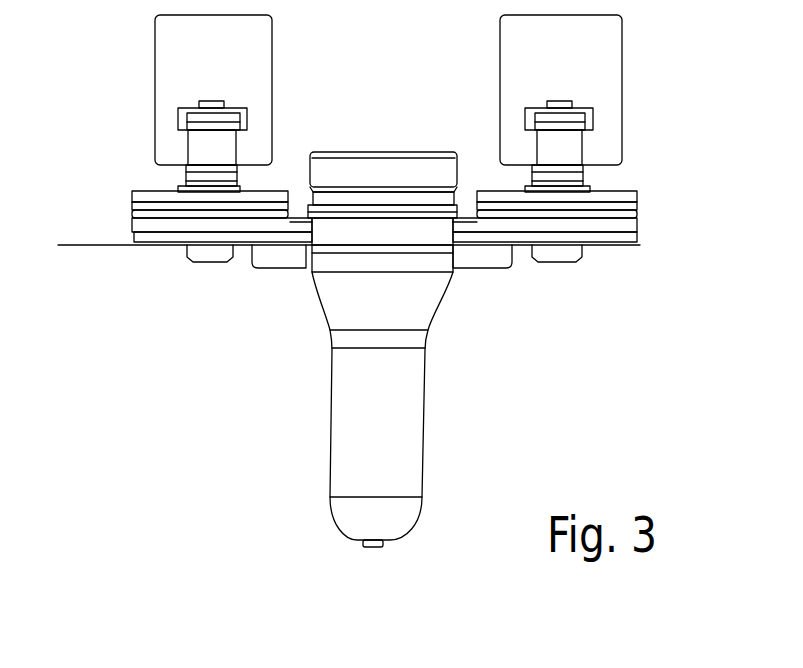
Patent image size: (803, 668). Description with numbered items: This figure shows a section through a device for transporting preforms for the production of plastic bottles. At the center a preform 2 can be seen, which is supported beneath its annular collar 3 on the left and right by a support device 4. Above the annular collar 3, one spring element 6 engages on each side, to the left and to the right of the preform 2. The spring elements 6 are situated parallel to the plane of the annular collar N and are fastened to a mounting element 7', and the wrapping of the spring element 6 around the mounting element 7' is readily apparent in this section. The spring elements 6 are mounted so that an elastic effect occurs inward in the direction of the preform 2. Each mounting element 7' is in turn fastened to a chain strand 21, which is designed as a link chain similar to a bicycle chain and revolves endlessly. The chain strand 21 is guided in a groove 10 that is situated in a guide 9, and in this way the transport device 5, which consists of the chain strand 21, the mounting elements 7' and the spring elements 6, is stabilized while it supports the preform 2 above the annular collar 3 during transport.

The preform 2 is at (398, 430).
The annular collar 3 is at (365, 233).
The support device 4 is at (278, 255).
The transport device 5 is at (172, 184).
The spring element 6 is at (300, 220).
The mounting element 7' is at (385, 273).
The guide 9 is at (250, 53).
The groove 10 is at (592, 115).
The chain strand 21 is at (202, 145).
The plane of the annular collar N is at (83, 245).